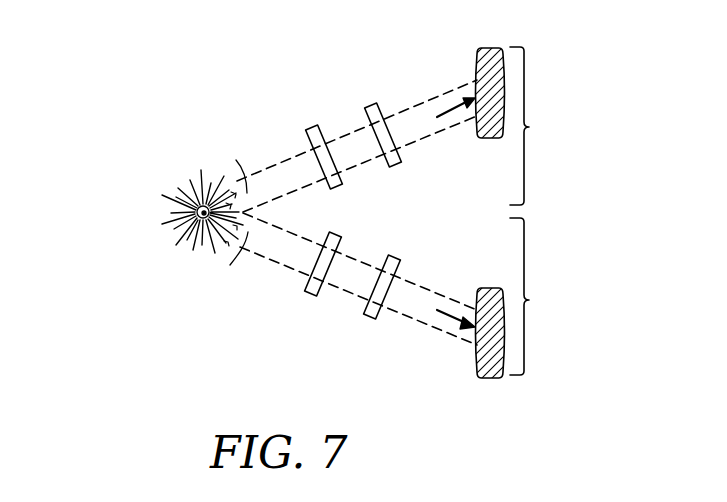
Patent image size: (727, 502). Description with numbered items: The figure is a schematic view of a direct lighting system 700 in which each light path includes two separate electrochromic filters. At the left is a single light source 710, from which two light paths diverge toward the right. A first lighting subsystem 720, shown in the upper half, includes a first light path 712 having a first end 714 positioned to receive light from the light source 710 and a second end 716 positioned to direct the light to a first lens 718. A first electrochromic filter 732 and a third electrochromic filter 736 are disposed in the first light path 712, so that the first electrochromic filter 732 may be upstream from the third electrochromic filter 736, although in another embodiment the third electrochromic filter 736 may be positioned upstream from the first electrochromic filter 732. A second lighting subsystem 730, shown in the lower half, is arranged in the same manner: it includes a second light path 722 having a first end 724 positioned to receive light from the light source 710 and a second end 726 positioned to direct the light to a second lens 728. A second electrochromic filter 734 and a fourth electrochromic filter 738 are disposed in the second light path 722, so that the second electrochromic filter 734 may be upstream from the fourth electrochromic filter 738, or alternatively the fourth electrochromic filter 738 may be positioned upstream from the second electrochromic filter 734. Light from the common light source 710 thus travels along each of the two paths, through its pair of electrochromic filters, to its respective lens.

The direct lighting system 700 is at (118, 145).
The light source 710 is at (193, 202).
The first end 714 is at (236, 160).
The first end 724 is at (230, 265).
The first light path 712 is at (350, 134).
The second light path 722 is at (350, 291).
The first electrochromic filter 732 is at (310, 128).
The third electrochromic filter 736 is at (371, 106).
The second electrochromic filter 734 is at (311, 293).
The fourth electrochromic filter 738 is at (370, 318).
The second end 716 is at (445, 103).
The second end 726 is at (445, 323).
The first lens 718 is at (476, 64).
The second lens 728 is at (478, 360).
The first lighting subsystem 720 is at (529, 127).
The second lighting subsystem 730 is at (529, 300).